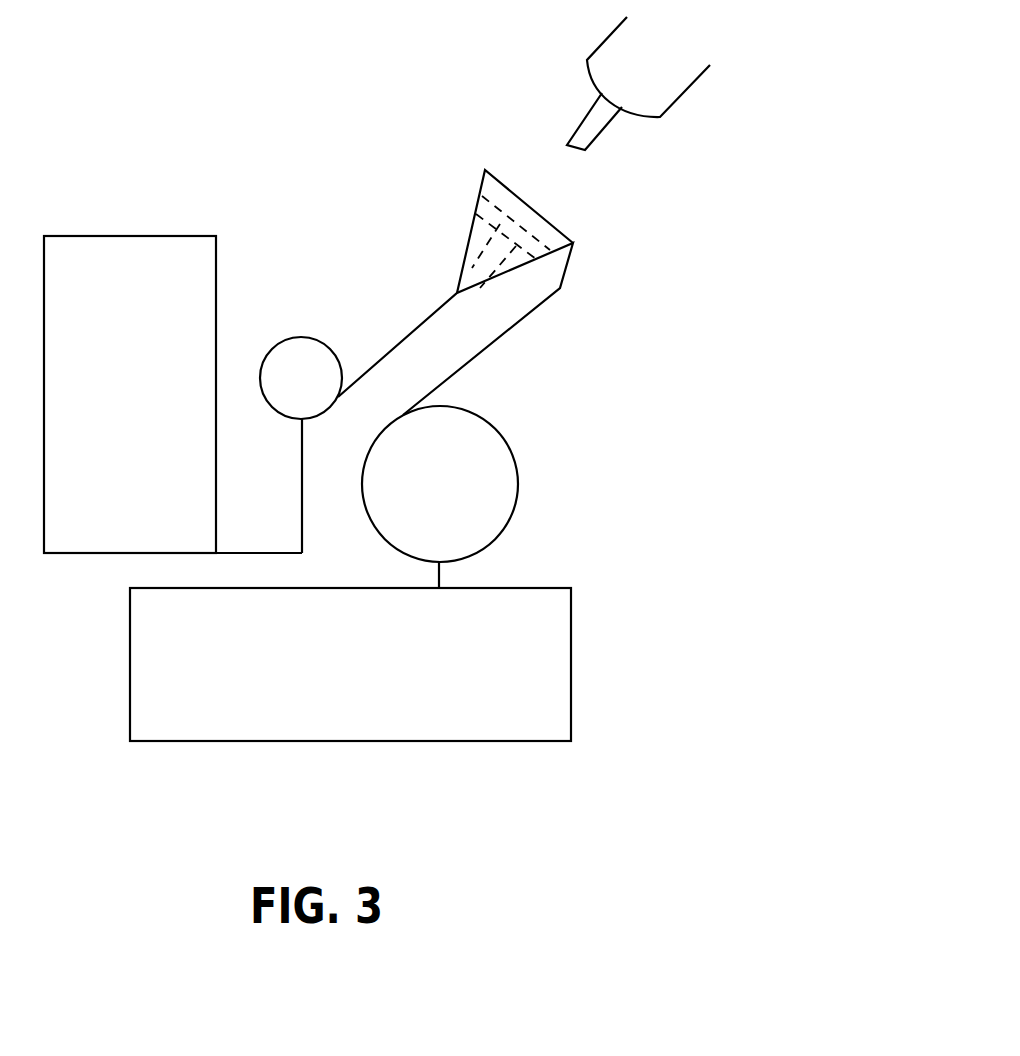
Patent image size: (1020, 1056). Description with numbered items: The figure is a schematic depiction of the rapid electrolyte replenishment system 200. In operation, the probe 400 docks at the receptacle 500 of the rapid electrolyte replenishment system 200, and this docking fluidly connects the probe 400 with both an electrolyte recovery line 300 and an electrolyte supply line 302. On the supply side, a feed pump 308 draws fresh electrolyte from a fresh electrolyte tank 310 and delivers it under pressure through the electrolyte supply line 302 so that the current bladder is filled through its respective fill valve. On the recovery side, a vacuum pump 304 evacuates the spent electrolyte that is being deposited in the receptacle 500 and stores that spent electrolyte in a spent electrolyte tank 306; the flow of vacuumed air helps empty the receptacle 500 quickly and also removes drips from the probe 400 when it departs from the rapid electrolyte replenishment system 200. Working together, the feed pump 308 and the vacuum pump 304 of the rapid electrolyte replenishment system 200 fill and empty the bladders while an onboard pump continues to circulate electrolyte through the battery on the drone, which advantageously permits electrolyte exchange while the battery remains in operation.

The rapid electrolyte replenishment system 200 is at (387, 150).
The electrolyte recovery line 300 is at (480, 326).
The electrolyte supply line 302 is at (415, 330).
The vacuum pump 304 is at (494, 427).
The spent electrolyte tank 306 is at (350, 647).
The feed pump 308 is at (292, 337).
The fresh electrolyte tank 310 is at (130, 394).
The probe 400 is at (645, 73).
The receptacle 500 is at (547, 220).